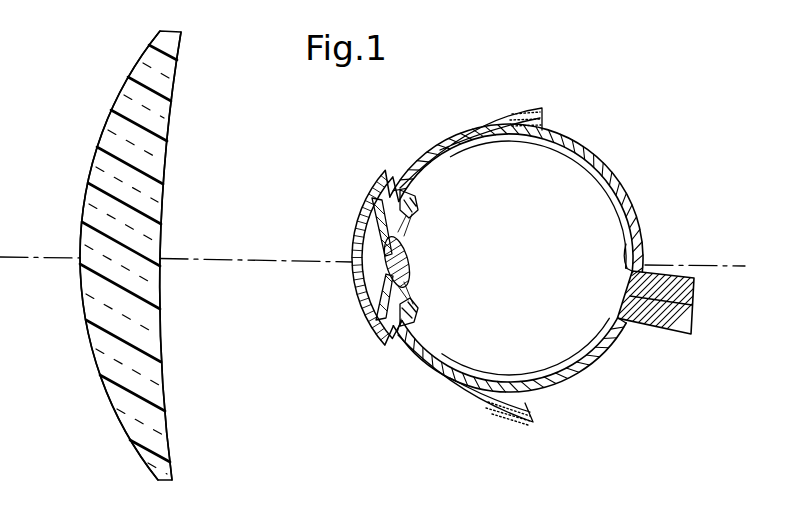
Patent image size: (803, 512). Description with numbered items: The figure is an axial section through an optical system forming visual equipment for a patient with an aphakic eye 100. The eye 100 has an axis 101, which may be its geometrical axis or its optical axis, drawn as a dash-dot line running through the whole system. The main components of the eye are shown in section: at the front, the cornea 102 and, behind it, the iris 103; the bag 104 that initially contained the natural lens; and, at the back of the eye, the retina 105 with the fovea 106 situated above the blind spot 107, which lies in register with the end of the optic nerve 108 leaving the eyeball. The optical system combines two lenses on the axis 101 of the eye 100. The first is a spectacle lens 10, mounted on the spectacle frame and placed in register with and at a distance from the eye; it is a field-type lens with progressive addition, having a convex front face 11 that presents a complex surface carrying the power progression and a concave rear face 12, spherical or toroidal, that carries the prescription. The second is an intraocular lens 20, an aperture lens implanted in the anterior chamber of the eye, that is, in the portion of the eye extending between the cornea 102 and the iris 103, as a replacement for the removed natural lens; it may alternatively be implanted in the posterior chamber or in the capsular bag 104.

The lens 10 is at (140, 251).
The convex front face 11 is at (97, 380).
The concave rear face 12 is at (180, 410).
The intraocular lens 20 is at (380, 255).
The aphakic eye 100 is at (521, 254).
The axis 101 is at (755, 268).
The cornea 102 is at (372, 306).
The iris 103 is at (406, 236).
The bag 104 is at (425, 303).
The retina 105 is at (600, 204).
The fovea 106 is at (627, 255).
The blind spot 107 is at (624, 290).
The optic nerve 108 is at (672, 312).